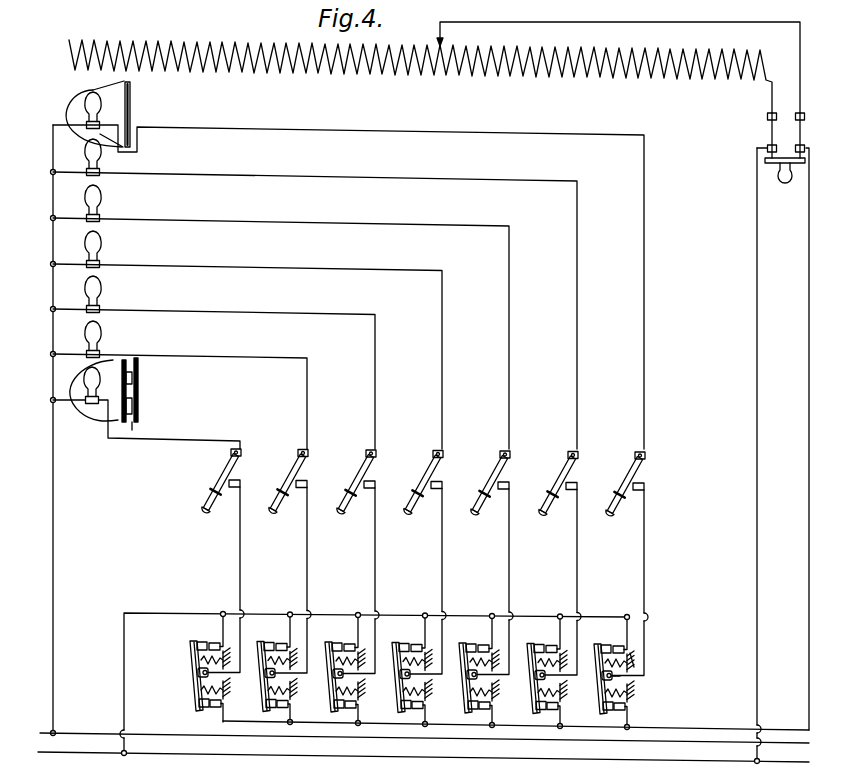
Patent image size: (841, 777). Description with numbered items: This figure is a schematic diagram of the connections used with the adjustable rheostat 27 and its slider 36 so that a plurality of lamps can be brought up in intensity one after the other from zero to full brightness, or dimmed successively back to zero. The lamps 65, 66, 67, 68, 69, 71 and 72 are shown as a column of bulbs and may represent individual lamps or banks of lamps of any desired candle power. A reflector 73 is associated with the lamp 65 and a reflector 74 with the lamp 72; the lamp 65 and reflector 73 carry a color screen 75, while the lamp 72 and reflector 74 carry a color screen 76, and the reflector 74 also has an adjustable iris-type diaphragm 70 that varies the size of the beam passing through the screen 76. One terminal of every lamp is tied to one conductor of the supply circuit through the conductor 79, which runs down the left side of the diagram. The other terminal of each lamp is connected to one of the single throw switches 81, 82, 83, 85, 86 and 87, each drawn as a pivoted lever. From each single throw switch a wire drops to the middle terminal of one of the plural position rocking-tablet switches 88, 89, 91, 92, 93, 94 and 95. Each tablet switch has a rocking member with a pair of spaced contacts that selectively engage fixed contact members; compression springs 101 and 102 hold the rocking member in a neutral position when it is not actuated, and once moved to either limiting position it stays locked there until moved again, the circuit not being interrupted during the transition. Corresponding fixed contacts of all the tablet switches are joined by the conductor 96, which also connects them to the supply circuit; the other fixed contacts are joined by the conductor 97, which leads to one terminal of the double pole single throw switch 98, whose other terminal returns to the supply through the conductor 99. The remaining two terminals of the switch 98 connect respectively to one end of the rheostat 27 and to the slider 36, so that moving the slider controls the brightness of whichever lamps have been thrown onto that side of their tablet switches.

The adjustable rheostat 27 is at (184, 50).
The slider 36 is at (438, 40).
The lamp 65 is at (90, 106).
The lamp 66 is at (93, 157).
The lamp 67 is at (87, 204).
The lamp 68 is at (100, 249).
The lamp 69 is at (100, 293).
The adjustable diaphragm 70 is at (130, 424).
The lamp 71 is at (100, 345).
The lamp 72 is at (95, 386).
The reflector 73 is at (68, 107).
The reflector 74 is at (87, 406).
The color screen 75 is at (131, 99).
The color screen 76 is at (137, 419).
The conductor 79 is at (56, 588).
The single throw switch 81 is at (629, 466).
The single throw switch 82 is at (562, 466).
The single throw switch 83 is at (494, 466).
The single throw switch 85 is at (360, 466).
The single throw switch 86 is at (292, 464).
The single throw switch 87 is at (222, 471).
The rocking-tablet switch 88 is at (596, 662).
The rocking-tablet switch 89 is at (529, 662).
The rocking-tablet switch 91 is at (461, 662).
The rocking-tablet switch 92 is at (394, 662).
The rocking-tablet switch 93 is at (327, 662).
The rocking-tablet switch 94 is at (259, 662).
The rocking-tablet switch 95 is at (192, 662).
The conductor 96 is at (150, 612).
The conductor 97 is at (809, 496).
The double pole single throw switch 98 is at (769, 134).
The conductor 99 is at (757, 466).
The compression spring 101 is at (630, 672).
The compression spring 102 is at (624, 679).